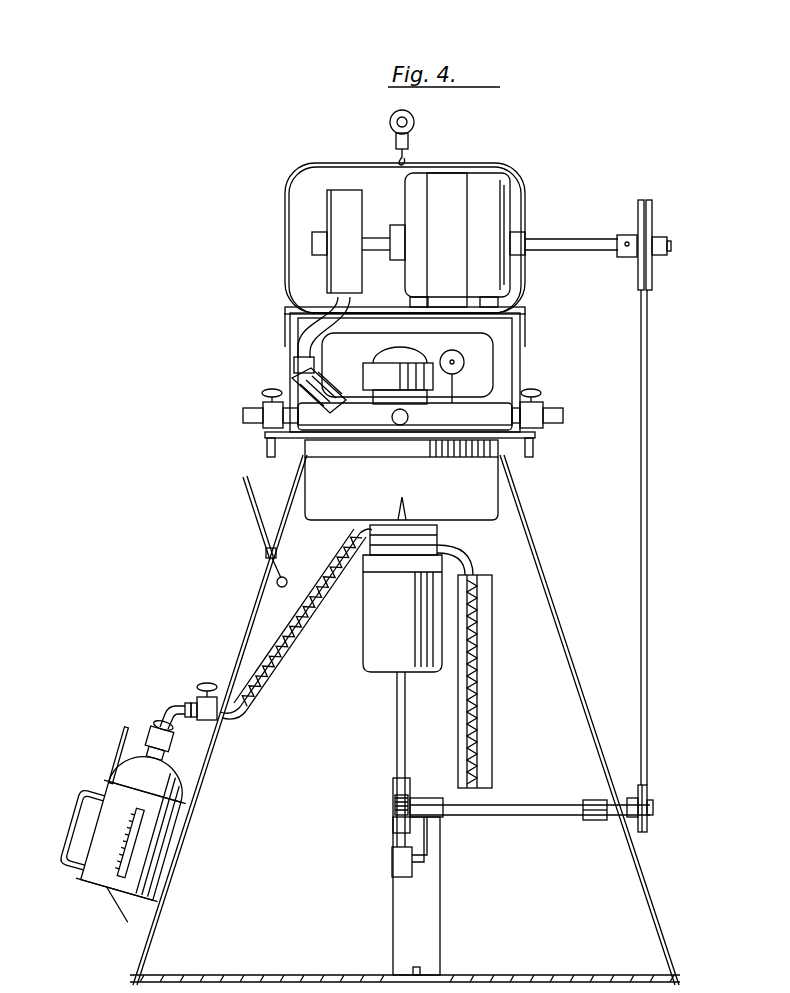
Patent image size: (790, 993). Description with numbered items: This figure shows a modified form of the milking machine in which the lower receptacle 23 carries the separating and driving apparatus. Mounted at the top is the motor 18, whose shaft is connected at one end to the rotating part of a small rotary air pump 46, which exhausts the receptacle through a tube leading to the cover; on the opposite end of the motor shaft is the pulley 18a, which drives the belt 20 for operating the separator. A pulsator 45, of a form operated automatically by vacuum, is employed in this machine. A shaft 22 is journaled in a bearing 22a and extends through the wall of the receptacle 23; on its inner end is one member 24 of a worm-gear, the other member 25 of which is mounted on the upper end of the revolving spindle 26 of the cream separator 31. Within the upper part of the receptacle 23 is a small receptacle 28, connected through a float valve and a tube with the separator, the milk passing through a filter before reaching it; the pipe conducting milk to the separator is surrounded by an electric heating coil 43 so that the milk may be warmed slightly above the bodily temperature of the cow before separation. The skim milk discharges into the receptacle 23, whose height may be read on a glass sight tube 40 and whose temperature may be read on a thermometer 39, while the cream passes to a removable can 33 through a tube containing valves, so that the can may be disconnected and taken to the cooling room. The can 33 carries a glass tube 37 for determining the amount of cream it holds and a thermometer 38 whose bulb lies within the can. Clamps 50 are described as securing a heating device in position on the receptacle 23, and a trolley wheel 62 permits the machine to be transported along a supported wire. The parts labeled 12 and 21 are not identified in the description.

The supporting column 12 is at (428, 918).
The motor 18 is at (496, 196).
The pulley 18a is at (653, 216).
The belt 20 is at (649, 427).
The driven pulley 21 is at (653, 802).
The shaft 22 is at (533, 806).
The bearing 22a is at (624, 848).
The receptacle 23 is at (540, 572).
The worm-gear member 24 is at (393, 790).
The worm-gear member 25 is at (395, 808).
The revolving spindle 26 is at (409, 728).
The small receptacle 28 is at (320, 479).
The separator 31 is at (386, 648).
The removable can 33 is at (103, 858).
The glass tube 37 is at (128, 823).
The thermometer 38 is at (114, 752).
The thermometer 39 is at (255, 500).
The glass sight tube 40 is at (316, 333).
The electric heating coil 43 is at (310, 617).
The pulsator 45 is at (386, 380).
The rotary air pump 46 is at (355, 207).
The clamps 50 is at (268, 441).
The trolley wheel 62 is at (414, 128).